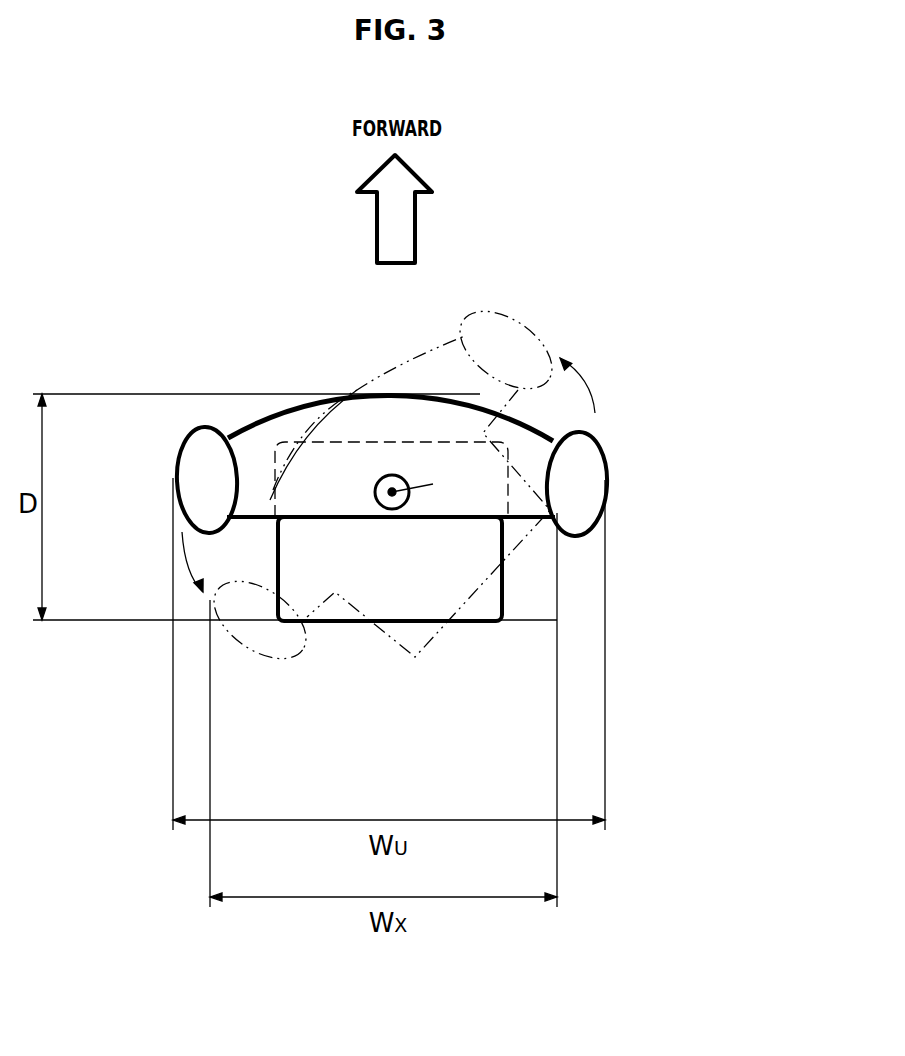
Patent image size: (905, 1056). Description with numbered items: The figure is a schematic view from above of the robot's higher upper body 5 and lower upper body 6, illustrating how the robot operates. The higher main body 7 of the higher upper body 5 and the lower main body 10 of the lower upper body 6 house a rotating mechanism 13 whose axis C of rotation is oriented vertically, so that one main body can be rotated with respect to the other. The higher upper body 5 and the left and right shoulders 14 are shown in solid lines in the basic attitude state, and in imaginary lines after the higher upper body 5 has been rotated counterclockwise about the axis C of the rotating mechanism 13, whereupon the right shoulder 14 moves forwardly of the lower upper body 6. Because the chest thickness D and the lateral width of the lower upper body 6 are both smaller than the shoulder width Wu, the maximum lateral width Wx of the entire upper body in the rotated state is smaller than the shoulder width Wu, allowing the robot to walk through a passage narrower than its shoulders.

The higher upper body 5 is at (275, 410).
The lower upper body 6 is at (418, 438).
The higher main body 7 is at (298, 405).
The lower main body 10 is at (505, 622).
The rotating mechanism 13 is at (408, 505).
The shoulders 14 is at (176, 471).